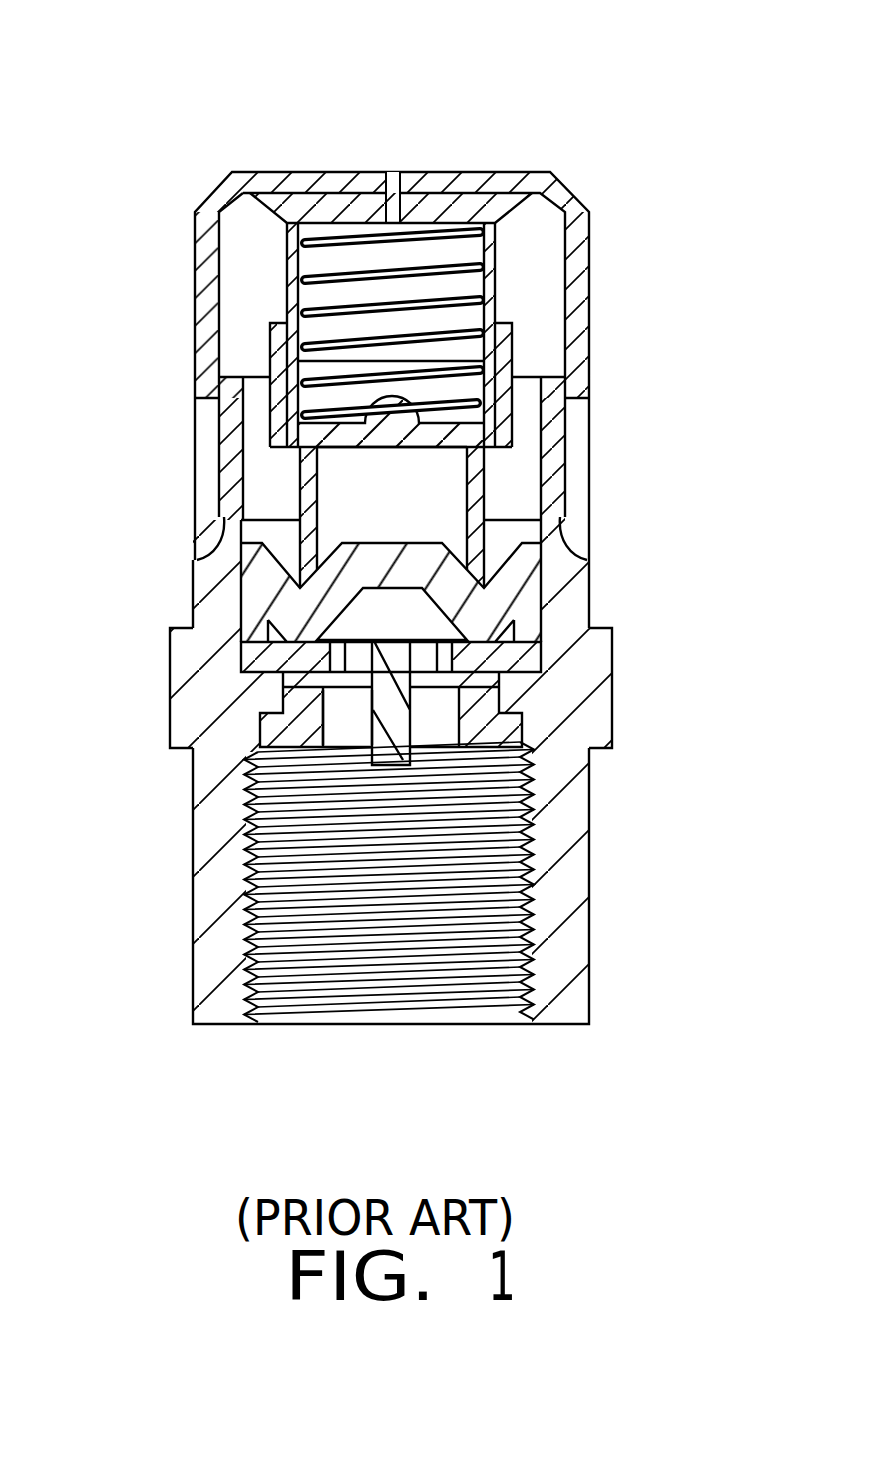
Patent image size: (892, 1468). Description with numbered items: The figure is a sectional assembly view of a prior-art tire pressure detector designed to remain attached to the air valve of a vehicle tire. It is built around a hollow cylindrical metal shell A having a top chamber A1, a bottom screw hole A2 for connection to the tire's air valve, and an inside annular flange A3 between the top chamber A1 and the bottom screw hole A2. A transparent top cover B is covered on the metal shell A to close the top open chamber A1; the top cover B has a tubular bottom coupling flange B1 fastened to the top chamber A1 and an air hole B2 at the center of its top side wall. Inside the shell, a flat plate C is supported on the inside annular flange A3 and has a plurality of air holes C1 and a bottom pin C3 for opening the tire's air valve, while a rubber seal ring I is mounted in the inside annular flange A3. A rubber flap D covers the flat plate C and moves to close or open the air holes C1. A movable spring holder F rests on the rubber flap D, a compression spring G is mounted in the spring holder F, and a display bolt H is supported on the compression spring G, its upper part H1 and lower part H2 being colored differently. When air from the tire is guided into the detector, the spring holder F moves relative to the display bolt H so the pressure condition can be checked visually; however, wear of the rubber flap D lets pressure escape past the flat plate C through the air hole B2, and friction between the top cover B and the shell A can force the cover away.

The hollow cylindrical metal shell A is at (570, 862).
The top chamber A1 is at (550, 515).
The bottom screw hole A2 is at (475, 993).
The inside annular flange A3 is at (275, 677).
The transparent top cover B is at (553, 187).
The tubular bottom coupling flange B1 is at (195, 555).
The air hole B2 is at (392, 222).
The flat plate C is at (530, 662).
The air holes C1 is at (470, 643).
The bottom pin C3 is at (525, 742).
The rubber flap D is at (520, 580).
The movable spring holder F is at (512, 437).
The compression spring G is at (462, 290).
The display bolt H is at (282, 277).
The upper part H1 is at (500, 238).
The lower part H2 is at (510, 328).
The rubber seal ring I is at (285, 727).